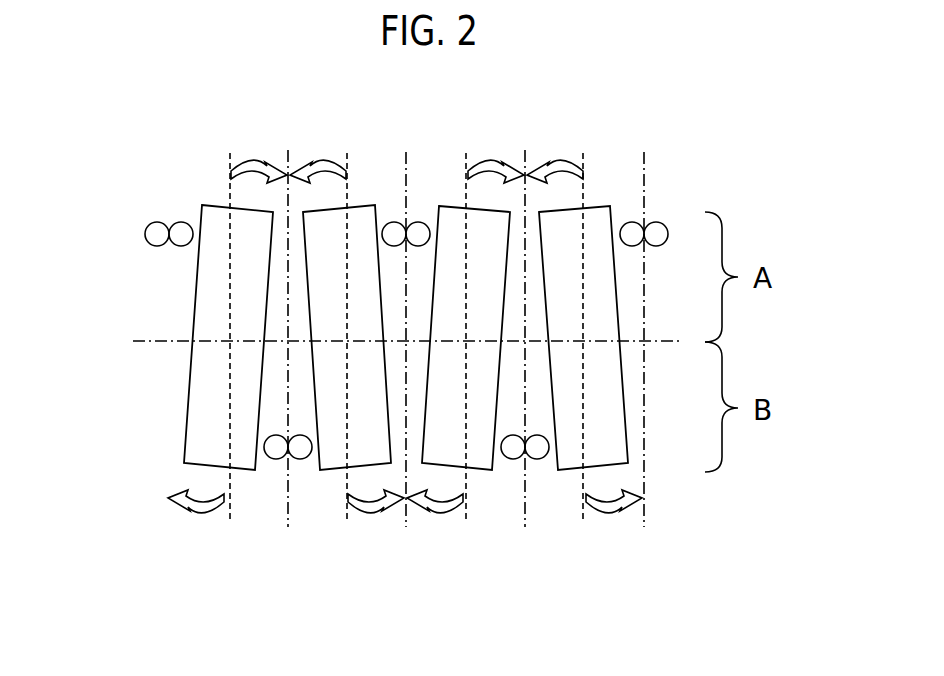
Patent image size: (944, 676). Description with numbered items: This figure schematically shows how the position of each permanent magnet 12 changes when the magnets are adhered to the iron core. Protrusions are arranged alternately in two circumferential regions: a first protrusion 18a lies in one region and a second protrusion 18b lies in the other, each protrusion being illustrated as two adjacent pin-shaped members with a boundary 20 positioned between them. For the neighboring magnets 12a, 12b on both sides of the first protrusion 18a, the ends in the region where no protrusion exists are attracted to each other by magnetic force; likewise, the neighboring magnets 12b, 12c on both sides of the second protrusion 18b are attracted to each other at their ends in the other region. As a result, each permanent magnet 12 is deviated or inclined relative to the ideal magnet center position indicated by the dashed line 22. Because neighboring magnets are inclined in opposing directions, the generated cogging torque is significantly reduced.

The permanent magnet 12 is at (406, 437).
The magnet 12a is at (329, 457).
The magnet 12b is at (483, 457).
The magnet 12c is at (573, 407).
The first protrusion 18a is at (420, 223).
The second protrusion 18b is at (272, 460).
The boundary 20 is at (644, 152).
The dashed line 22 is at (230, 153).